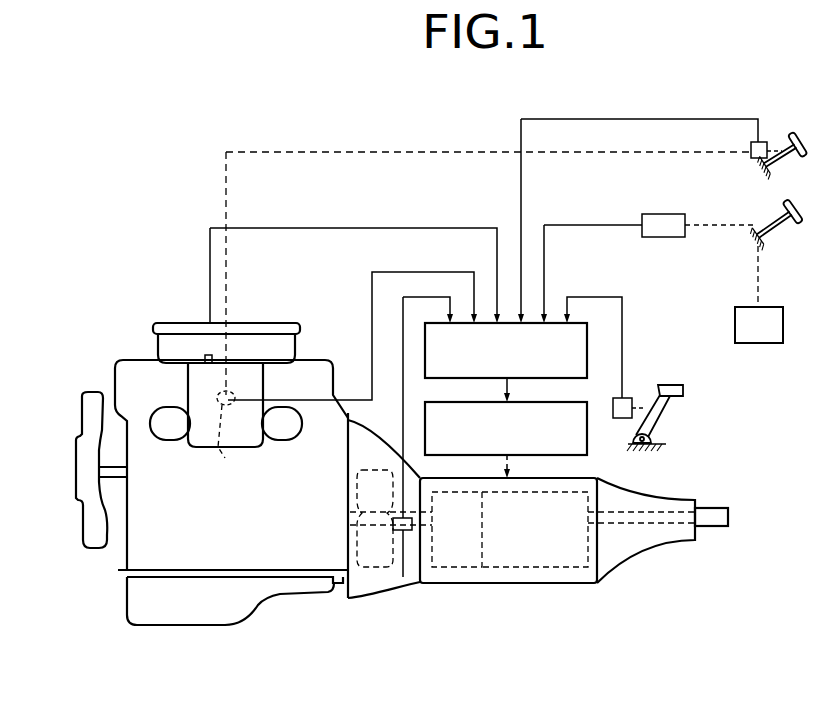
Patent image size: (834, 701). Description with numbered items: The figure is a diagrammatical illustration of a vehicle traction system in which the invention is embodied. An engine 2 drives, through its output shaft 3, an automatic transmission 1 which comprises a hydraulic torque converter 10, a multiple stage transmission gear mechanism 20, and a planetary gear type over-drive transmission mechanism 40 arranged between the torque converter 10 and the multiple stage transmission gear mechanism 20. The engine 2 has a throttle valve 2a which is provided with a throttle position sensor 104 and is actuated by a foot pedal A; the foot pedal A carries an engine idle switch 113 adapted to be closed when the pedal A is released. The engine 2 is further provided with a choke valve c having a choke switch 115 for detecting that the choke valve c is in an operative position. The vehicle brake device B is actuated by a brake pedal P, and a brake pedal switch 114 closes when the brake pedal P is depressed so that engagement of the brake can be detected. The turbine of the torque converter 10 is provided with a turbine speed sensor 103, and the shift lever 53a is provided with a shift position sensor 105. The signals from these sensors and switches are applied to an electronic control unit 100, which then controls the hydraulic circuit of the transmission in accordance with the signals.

The automatic transmission 1 is at (562, 591).
The engine 2 is at (262, 555).
The throttle valve 2a is at (226, 318).
The output shaft 3 is at (357, 528).
The hydraulic torque converter 10 is at (366, 578).
The multiple stage transmission gear mechanism 20 is at (521, 568).
The planetary gear type over-drive transmission mechanism 40 is at (452, 568).
The electronic control unit 100 is at (588, 358).
The turbine speed sensor 103 is at (403, 577).
The throttle position sensor 104 is at (232, 394).
The shift position sensor 105 is at (627, 397).
The engine idle switch 113 is at (766, 142).
The brake pedal switch 114 is at (672, 237).
The choke switch 115 is at (207, 356).
The shift lever 53a is at (683, 386).
The foot pedal A is at (790, 158).
The brake pedal P is at (785, 230).
The vehicle brake device B is at (783, 330).
The choke valve c is at (210, 347).